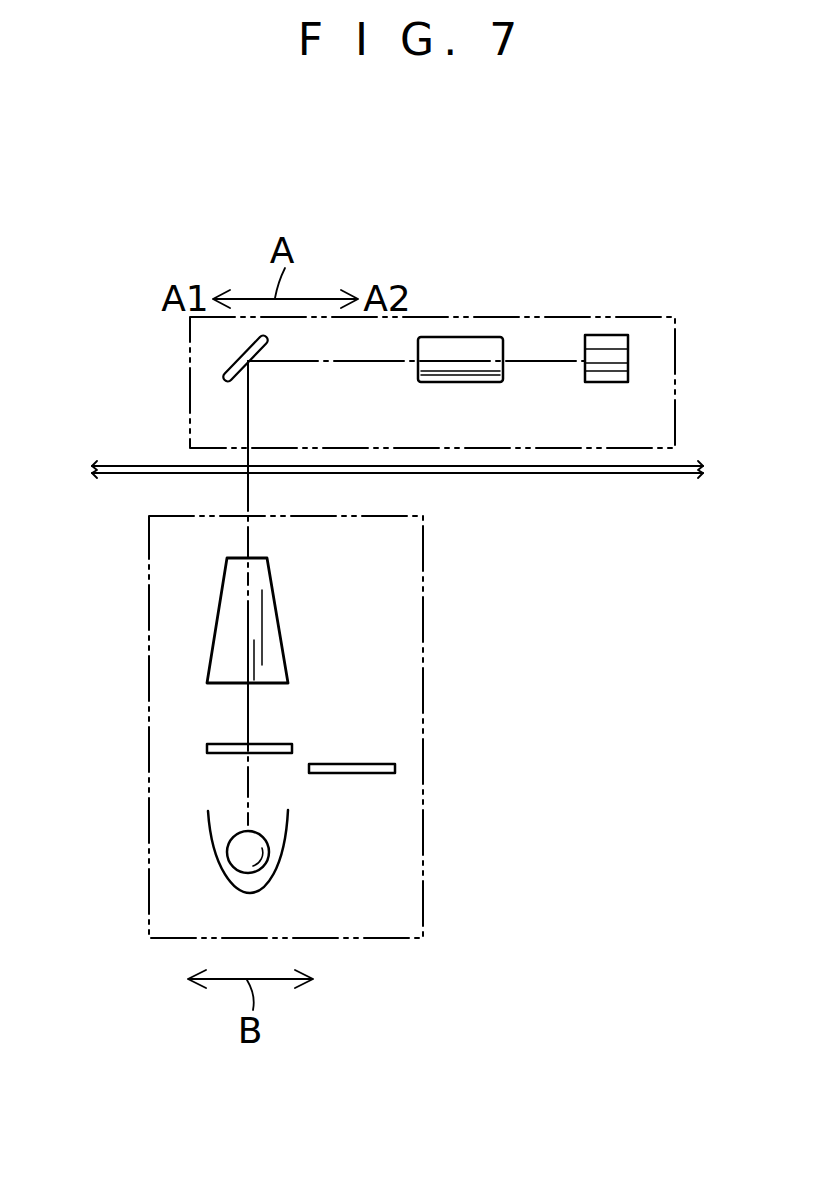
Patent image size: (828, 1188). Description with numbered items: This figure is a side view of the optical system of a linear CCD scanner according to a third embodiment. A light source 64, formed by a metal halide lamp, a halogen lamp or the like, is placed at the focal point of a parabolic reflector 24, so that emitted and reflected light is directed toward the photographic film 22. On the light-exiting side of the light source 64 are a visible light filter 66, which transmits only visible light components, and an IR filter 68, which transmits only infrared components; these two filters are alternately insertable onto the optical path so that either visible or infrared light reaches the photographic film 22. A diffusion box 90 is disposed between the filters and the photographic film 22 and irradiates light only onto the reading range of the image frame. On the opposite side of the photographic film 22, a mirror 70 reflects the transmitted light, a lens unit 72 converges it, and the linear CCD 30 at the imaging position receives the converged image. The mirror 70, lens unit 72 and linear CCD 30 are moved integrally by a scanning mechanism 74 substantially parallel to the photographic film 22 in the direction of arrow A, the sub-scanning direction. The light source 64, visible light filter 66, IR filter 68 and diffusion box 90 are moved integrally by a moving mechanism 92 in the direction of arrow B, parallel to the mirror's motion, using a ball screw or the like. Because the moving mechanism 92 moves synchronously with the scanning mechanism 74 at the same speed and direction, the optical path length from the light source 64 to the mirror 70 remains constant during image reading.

The photographic film 22 is at (505, 476).
The parabolic reflector 24 is at (262, 880).
The linear CCD 30 is at (603, 340).
The light source 64 is at (258, 845).
The visible light filter 66 is at (205, 750).
The IR filter 68 is at (350, 765).
The mirror 70 is at (236, 354).
The lens unit 72 is at (461, 350).
The scanning mechanism 74 is at (532, 310).
The diffusion box 90 is at (272, 630).
The moving mechanism 92 is at (146, 642).